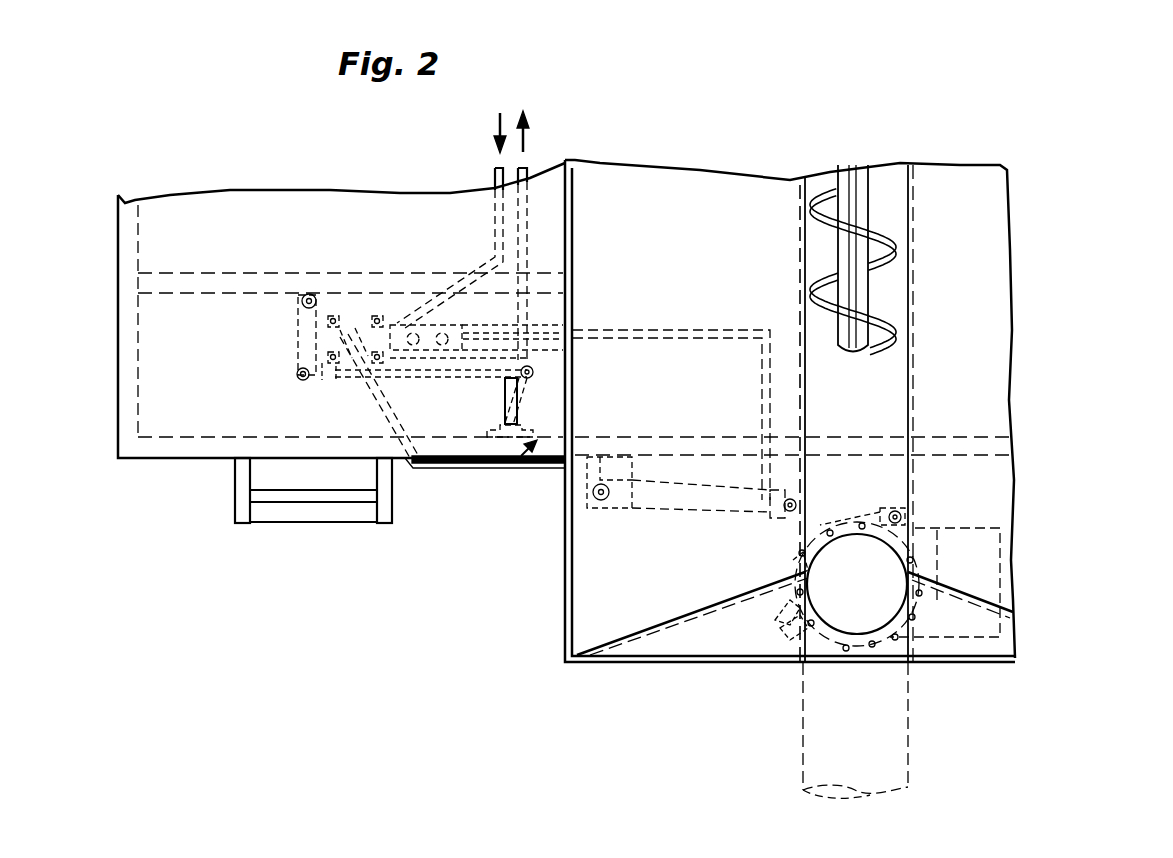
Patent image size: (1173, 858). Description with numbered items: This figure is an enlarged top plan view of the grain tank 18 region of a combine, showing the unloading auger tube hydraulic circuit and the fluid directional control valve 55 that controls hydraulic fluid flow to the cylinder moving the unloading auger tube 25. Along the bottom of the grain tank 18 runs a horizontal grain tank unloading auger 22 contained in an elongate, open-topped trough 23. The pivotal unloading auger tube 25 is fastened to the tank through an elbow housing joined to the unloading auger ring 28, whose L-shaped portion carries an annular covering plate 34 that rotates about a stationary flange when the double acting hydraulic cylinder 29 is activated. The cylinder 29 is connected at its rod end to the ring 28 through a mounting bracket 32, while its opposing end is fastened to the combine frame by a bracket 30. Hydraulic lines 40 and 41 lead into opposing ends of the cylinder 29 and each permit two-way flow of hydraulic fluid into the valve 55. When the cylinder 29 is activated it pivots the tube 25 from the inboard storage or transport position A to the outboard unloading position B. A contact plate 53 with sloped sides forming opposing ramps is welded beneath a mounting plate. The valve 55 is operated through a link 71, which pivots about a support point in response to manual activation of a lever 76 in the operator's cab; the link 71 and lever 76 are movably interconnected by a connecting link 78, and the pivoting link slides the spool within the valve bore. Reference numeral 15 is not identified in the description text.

The tank 15 is at (512, 462).
The grain tank 18 is at (566, 592).
The grain tank unloading auger 22 is at (820, 185).
The trough 23 is at (908, 385).
The unloading auger tube 25 is at (940, 663).
The unloading auger ring 28 is at (778, 598).
The double acting hydraulic cylinder 29 is at (720, 500).
The bracket 30 is at (587, 478).
The mounting bracket 32 is at (838, 503).
The annular covering plate 34 is at (793, 574).
The hydraulic line 40 is at (386, 420).
The hydraulic line 41 is at (702, 330).
The contact plate 53 is at (776, 650).
The fluid directional control valve 55 is at (357, 333).
The link 71 is at (298, 362).
The lever 76 is at (505, 385).
The connecting link 78 is at (332, 380).
The inboard position A is at (982, 527).
The outboard position B is at (908, 765).